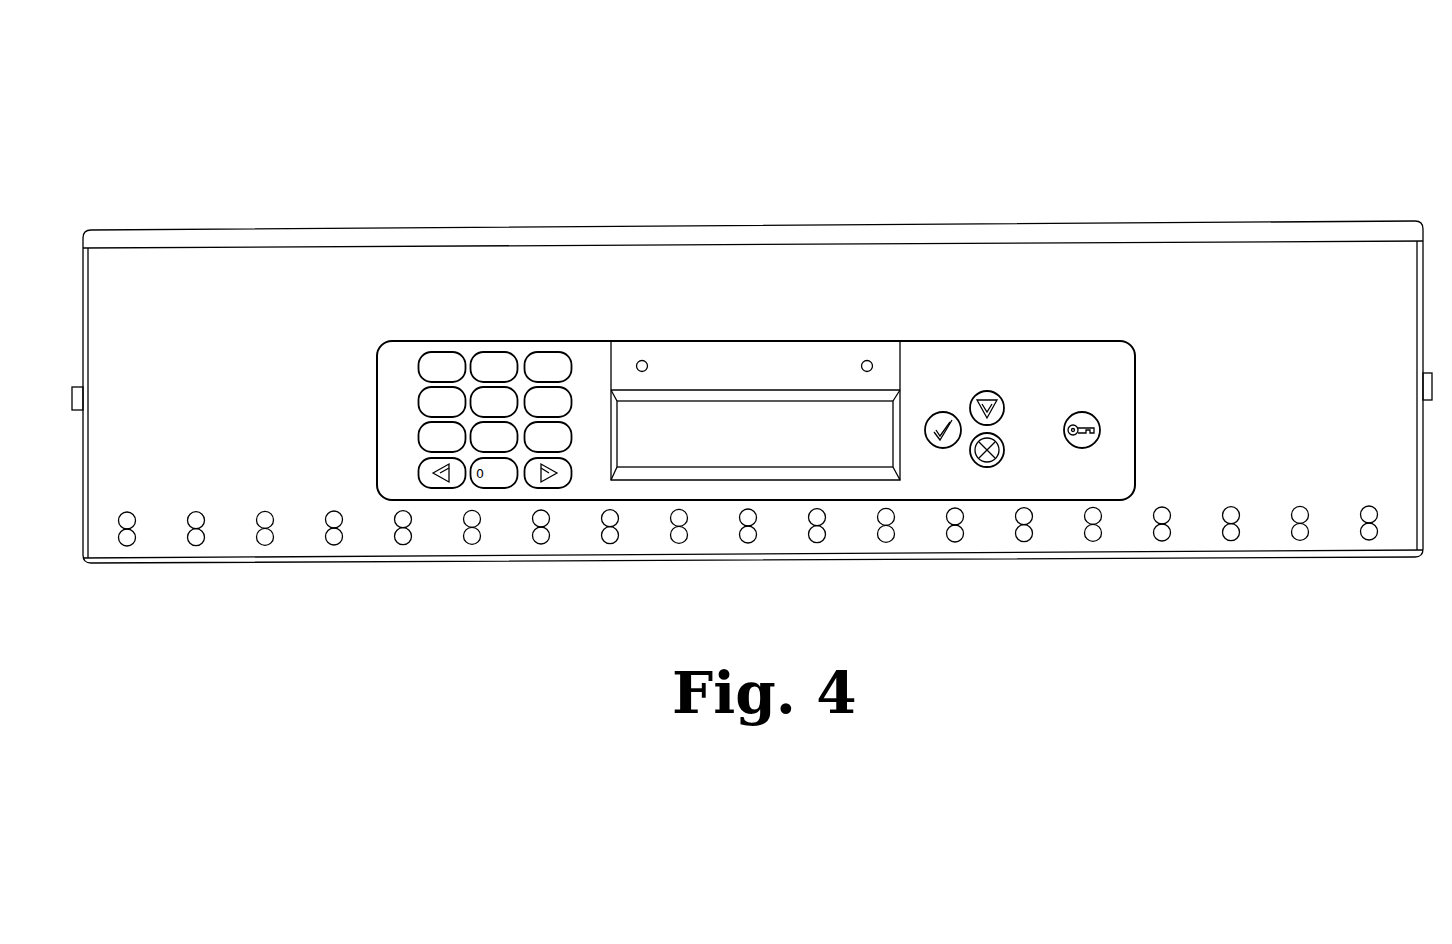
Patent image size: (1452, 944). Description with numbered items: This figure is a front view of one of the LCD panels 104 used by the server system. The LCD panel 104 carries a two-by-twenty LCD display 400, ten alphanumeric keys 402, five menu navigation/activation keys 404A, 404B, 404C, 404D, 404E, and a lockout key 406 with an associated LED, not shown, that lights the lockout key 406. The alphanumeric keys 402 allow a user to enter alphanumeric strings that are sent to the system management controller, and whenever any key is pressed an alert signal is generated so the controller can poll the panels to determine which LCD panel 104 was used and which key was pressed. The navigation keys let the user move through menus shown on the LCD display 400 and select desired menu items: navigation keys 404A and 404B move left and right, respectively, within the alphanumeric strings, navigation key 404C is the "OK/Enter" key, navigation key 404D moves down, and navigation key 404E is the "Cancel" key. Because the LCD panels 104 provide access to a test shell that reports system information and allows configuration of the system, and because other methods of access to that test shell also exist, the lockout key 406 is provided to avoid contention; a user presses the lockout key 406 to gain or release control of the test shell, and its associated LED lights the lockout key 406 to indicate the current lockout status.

The LCD panel 104 is at (307, 168).
The LCD display 400 is at (764, 422).
The alphanumeric keys 402 is at (412, 369).
The navigation key 404A is at (420, 471).
The navigation key 404B is at (560, 488).
The navigation key 404C is at (943, 412).
The navigation key 404D is at (990, 392).
The navigation key 404E is at (998, 462).
The lockout key 406 is at (1098, 418).